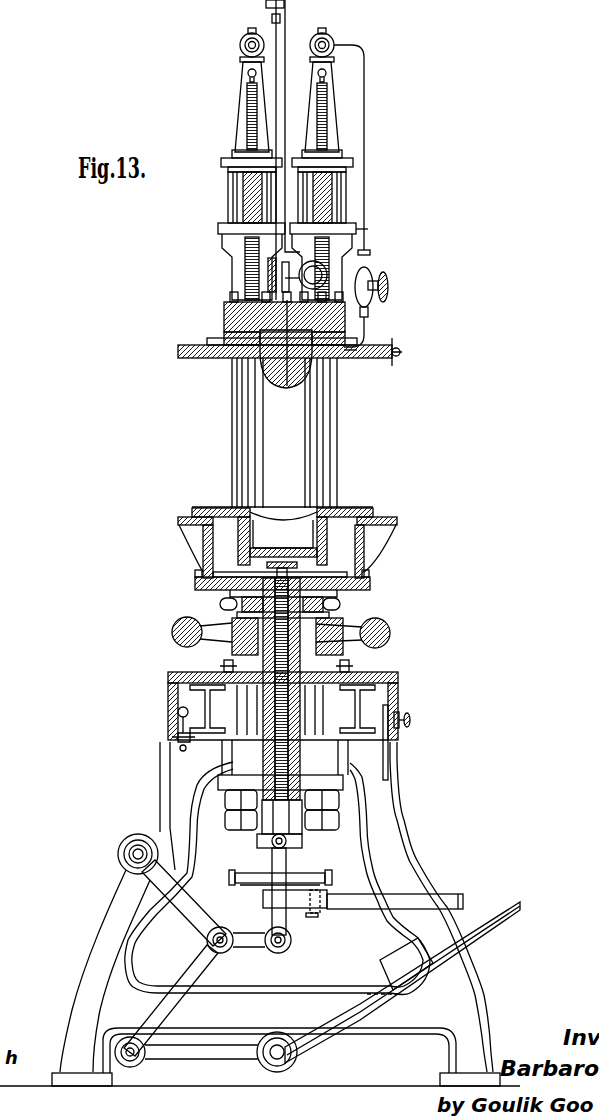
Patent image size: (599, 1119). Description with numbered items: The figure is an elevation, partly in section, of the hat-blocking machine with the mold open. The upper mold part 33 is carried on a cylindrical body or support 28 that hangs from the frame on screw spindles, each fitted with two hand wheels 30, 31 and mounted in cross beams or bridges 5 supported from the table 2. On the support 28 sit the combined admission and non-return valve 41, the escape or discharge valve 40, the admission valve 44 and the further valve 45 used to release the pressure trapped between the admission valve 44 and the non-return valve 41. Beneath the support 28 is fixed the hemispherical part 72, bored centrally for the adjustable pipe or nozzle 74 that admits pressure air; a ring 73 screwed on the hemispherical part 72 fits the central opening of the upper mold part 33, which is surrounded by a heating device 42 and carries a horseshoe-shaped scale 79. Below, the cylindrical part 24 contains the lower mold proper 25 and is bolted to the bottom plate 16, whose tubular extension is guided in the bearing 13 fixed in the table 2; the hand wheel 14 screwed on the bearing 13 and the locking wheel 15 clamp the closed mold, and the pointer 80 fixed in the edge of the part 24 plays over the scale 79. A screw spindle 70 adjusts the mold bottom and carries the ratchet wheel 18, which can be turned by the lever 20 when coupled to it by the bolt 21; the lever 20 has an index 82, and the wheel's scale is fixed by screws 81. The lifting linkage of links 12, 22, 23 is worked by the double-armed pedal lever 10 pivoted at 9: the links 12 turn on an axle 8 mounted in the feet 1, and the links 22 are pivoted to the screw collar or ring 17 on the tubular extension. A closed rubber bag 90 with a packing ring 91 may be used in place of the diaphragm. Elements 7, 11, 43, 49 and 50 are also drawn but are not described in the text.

The feet 1 is at (473, 1008).
The table 2 is at (167, 705).
The cross beams or bridges 5 is at (232, 192).
The nuts 7 is at (242, 827).
The axle 8 is at (118, 848).
The pivot 9 is at (300, 1053).
The double-armed pedal lever 10 is at (522, 902).
The block 11 is at (392, 967).
The links 12 is at (198, 918).
The bearing 13 is at (217, 672).
The hand wheel 14 is at (385, 637).
The locking wheel 15 is at (343, 604).
The bottom plate 16 is at (370, 582).
The screw collar or ring 17 is at (293, 840).
The ratchet wheel 18 is at (305, 872).
The lever 20 is at (467, 900).
The bolt 21 is at (312, 912).
The links 22 is at (283, 920).
The links 23 is at (200, 973).
The cylindrical part 24 is at (178, 521).
The lower mold 25 is at (375, 515).
The cylindrical support 28 is at (232, 305).
The hand wheel 30 is at (218, 230).
The hand wheel 31 is at (224, 158).
The upper mold part 33 is at (225, 337).
The escape valve 40 is at (364, 285).
The non-return valve 41 is at (233, 265).
The heating device 42 is at (380, 340).
The tube 43 is at (363, 93).
The admission valve 44 is at (390, 280).
The valve 45 is at (375, 285).
The rod 49 is at (385, 765).
The screw 50 is at (400, 710).
The screw spindle 70 is at (277, 850).
The hemispherical part 72 is at (272, 355).
The ring 73 is at (345, 358).
The adjustable pipe 74 is at (300, 382).
The horseshoe shaped scale 79 is at (400, 353).
The pointer 80 is at (395, 526).
The screws 81 is at (332, 880).
The index 82 is at (327, 890).
The rubber bag 90 is at (287, 521).
The packing ring 91 is at (322, 509).